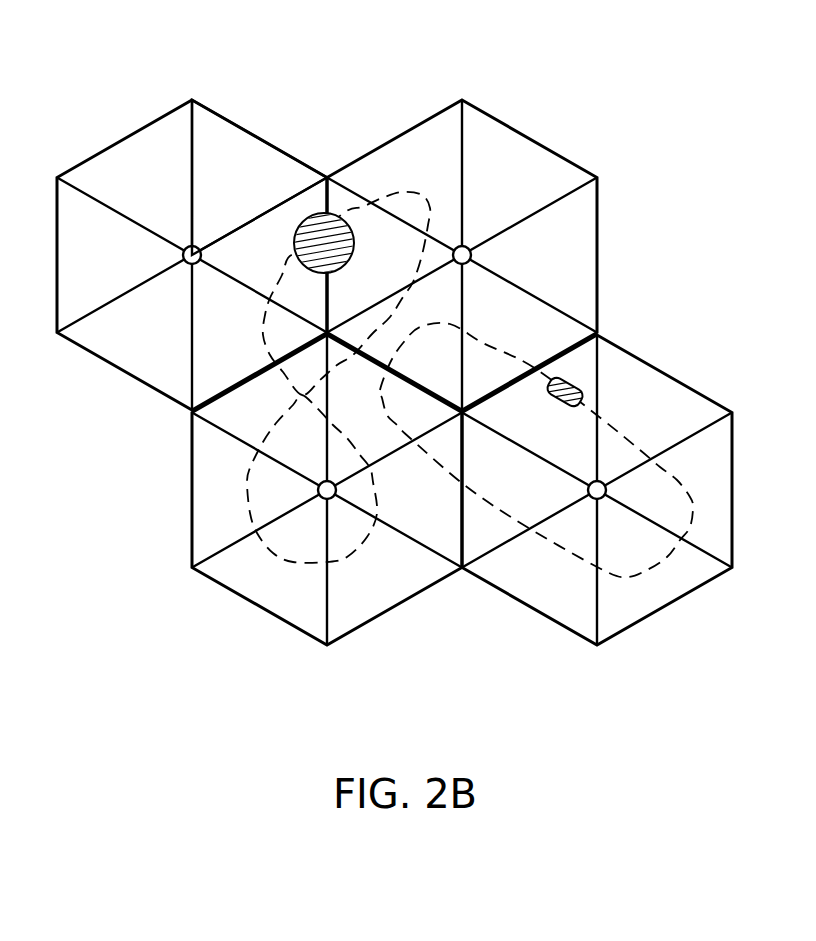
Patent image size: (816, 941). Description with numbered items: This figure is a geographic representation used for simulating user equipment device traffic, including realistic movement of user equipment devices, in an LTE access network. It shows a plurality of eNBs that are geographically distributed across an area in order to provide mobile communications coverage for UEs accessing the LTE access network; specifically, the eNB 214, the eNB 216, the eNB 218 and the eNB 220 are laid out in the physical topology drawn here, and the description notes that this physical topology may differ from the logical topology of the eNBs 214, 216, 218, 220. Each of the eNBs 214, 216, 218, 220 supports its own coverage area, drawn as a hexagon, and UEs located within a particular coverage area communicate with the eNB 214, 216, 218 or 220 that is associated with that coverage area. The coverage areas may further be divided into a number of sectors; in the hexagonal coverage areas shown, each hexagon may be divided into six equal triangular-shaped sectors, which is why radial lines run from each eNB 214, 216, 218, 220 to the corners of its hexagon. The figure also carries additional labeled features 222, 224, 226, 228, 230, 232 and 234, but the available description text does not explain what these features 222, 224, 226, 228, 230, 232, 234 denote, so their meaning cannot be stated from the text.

The eNB 214 is at (186, 251).
The eNB 216 is at (466, 252).
The eNB 218 is at (325, 497).
The eNB 220 is at (594, 497).
The first hatched object (user device) 222 is at (317, 238).
The second hatched object (user device) 224 is at (568, 380).
The hatching / device body 226 is at (587, 377).
The cell sector 228 is at (278, 230).
The upper dashed zone 230 is at (378, 242).
The right dashed zone 232 is at (650, 573).
The lower dashed zone 234 is at (243, 483).